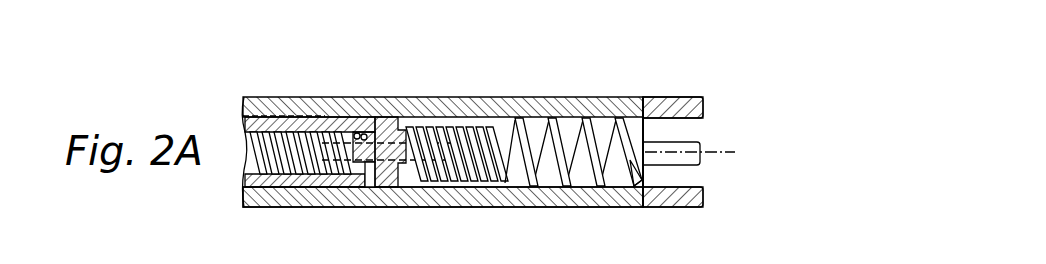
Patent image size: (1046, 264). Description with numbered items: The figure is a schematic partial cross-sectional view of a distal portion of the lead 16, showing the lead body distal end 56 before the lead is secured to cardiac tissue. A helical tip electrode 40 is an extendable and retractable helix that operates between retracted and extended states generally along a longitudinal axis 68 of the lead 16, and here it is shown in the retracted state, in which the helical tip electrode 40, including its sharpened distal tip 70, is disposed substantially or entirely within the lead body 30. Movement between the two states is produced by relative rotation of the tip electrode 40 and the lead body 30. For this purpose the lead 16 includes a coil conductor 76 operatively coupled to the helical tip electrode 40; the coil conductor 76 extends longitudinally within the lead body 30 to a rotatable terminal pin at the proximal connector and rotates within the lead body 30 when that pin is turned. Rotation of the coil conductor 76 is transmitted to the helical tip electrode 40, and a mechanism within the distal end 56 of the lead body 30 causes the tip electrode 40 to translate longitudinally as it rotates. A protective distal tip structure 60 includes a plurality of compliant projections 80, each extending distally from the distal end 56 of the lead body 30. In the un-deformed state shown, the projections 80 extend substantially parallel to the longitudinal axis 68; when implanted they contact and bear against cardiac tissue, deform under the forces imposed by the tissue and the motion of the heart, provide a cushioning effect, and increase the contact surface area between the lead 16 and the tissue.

The lead 16 is at (280, 72).
The lead body 30 is at (337, 214).
The helical tip electrode 40 is at (571, 122).
The lead body distal end 56 is at (370, 88).
The protective distal tip structure 60 is at (666, 88).
The longitudinal axis 68 is at (705, 160).
The sharpened distal tip 70 is at (632, 168).
The coil conductor 76 is at (271, 164).
The compliant projections 80 is at (705, 103).